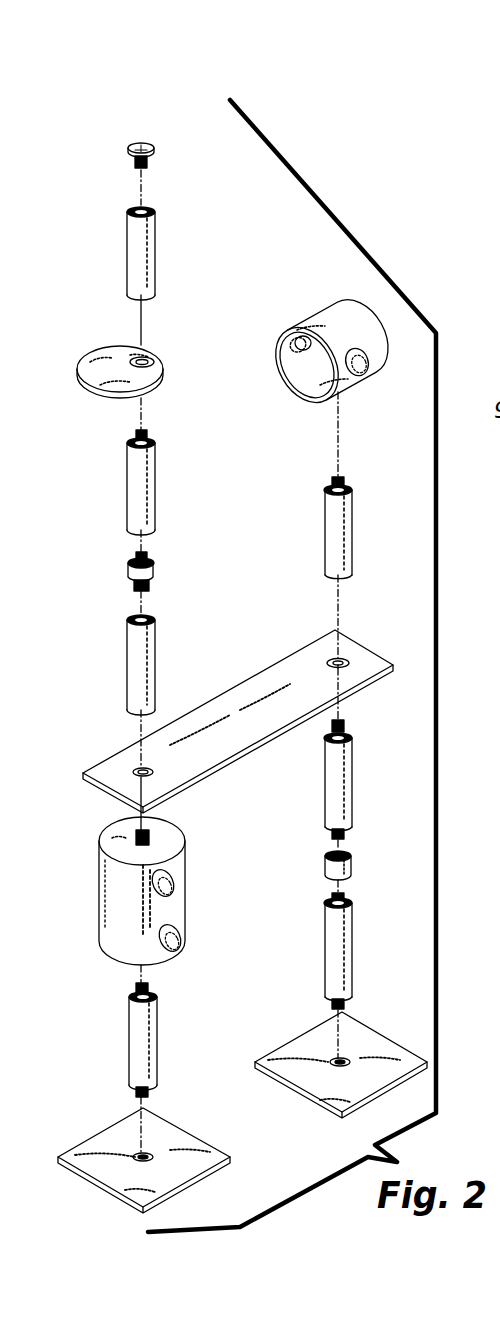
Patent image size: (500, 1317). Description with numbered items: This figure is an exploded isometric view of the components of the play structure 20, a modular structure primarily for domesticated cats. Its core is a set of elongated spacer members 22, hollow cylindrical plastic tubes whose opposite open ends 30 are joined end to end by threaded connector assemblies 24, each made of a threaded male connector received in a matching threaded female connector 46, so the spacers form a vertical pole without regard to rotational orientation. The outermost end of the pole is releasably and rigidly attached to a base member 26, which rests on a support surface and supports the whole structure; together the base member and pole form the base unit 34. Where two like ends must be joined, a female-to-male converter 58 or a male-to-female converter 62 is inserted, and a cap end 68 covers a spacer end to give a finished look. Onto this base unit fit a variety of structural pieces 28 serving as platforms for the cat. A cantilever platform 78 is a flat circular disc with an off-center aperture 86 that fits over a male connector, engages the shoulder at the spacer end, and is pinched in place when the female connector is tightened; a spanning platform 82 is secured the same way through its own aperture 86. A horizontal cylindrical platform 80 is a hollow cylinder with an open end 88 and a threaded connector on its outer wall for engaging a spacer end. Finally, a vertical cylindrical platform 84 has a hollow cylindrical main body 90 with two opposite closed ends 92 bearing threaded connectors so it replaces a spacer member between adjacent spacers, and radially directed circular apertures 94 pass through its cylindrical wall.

The play structure 20 is at (72, 193).
The spacer member 22 is at (140, 261).
The threaded connector assembly 24 is at (147, 553).
The base member 26 is at (133, 1175).
The structural piece 28 is at (103, 355).
The open end 30 is at (153, 213).
The base unit 34 is at (108, 1038).
The threaded female connector 46 is at (148, 1150).
The female-to-male converter 58 is at (153, 567).
The male-to-female converter 62 is at (328, 857).
The cap end 68 is at (143, 143).
The cantilever platform 78 is at (82, 373).
The horizontal cylindrical platform 80 is at (308, 320).
The spanning platform 82 is at (282, 683).
The vertical cylindrical platform 84 is at (185, 867).
The aperture 86 is at (150, 355).
The open end 88 is at (278, 360).
The hollow cylindrical main body 90 is at (110, 905).
The closed end 92 is at (118, 838).
The radially directed aperture 94 is at (175, 882).